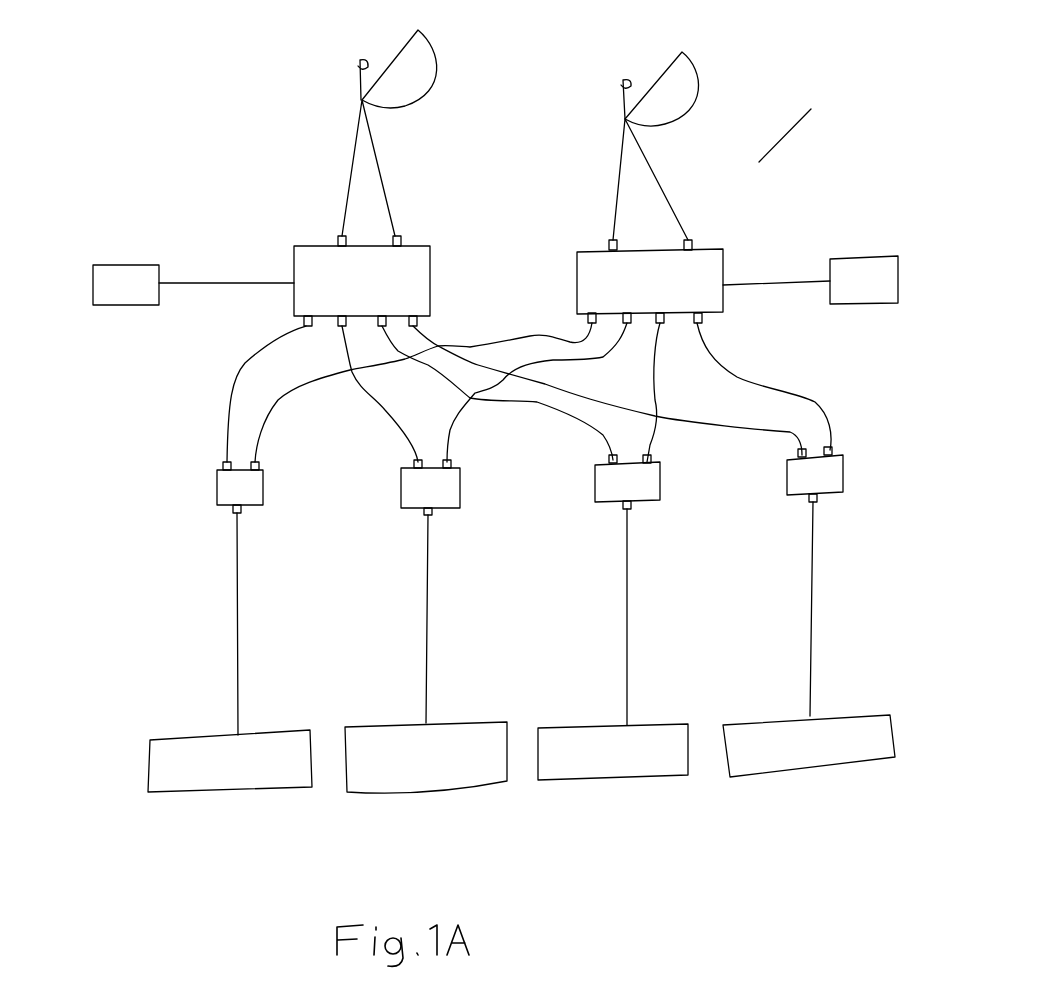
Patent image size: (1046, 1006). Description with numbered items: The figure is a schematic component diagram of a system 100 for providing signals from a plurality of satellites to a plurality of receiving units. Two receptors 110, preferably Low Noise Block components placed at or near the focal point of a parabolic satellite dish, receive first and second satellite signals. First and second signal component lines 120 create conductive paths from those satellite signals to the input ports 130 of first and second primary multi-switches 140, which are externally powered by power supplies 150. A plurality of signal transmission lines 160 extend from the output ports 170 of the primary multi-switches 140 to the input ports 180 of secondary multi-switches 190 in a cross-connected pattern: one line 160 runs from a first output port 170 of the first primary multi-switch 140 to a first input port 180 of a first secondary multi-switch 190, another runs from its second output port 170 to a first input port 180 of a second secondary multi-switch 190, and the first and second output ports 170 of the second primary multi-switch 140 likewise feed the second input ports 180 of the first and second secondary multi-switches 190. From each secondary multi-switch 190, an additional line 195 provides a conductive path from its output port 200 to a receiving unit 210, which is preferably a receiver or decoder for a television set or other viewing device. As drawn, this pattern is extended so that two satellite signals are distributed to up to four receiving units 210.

The system 100 is at (759, 162).
The receptor 110 is at (352, 62).
The signal component line 120 is at (344, 193).
The input port 130 is at (338, 241).
The primary multi-switch 140 is at (291, 296).
The power supply 150 is at (100, 305).
The signal transmission line 160 is at (227, 418).
The output port 170 is at (307, 323).
The input port 180 is at (221, 466).
The secondary multi-switch 190 is at (224, 497).
The additional line 195 is at (238, 660).
The output port 200 is at (240, 514).
The receiving unit 210 is at (150, 767).